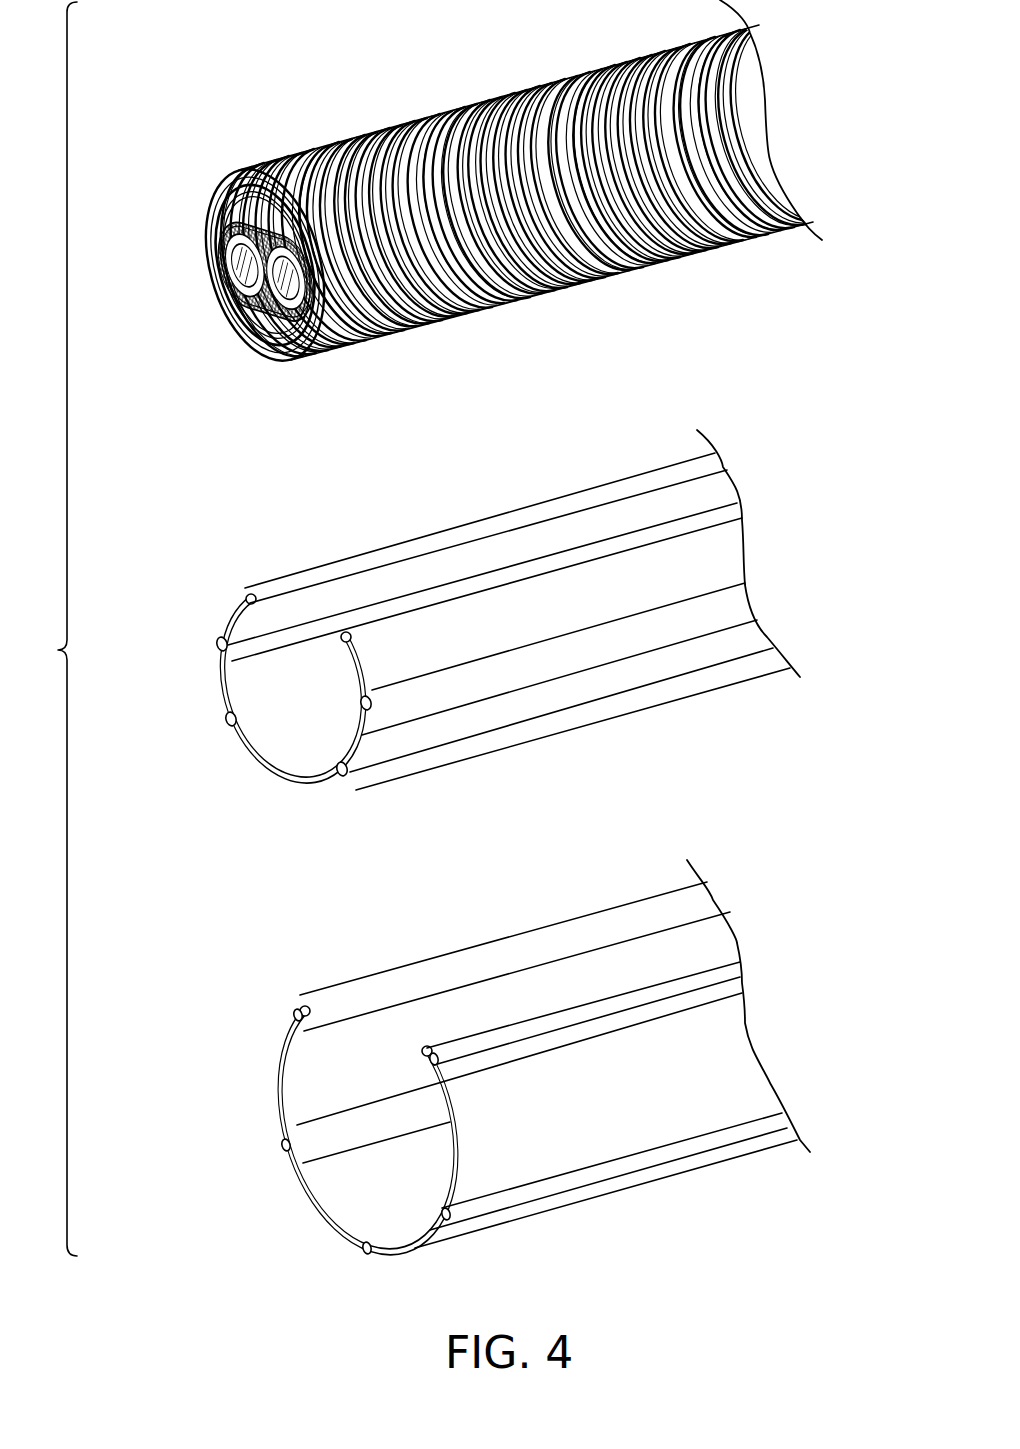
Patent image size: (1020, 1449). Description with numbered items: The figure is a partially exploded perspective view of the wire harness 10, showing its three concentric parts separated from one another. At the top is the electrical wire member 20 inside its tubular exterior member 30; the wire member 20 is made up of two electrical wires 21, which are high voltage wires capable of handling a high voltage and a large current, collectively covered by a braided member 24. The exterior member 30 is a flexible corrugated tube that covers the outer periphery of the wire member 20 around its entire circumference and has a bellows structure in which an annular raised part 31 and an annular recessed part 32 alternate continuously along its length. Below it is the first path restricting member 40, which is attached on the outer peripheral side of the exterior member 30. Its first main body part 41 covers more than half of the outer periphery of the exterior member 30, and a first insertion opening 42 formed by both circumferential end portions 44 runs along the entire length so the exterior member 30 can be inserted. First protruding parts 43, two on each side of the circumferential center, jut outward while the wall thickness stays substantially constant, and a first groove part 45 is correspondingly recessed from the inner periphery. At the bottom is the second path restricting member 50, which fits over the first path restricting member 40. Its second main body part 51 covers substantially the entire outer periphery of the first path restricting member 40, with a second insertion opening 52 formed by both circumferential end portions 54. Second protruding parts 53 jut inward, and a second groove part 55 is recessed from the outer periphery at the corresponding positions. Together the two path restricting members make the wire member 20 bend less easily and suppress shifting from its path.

The wire harness 10 is at (432, 64).
The electrical wire member 20 is at (265, 311).
The electrical wires 21 is at (262, 312).
The braided member 24 is at (262, 218).
The exterior member 30 is at (378, 137).
The annular raised part 31 is at (303, 183).
The annular recessed part 32 is at (277, 193).
The first path restricting member 40 is at (488, 516).
The first main body part 41 is at (628, 680).
The first insertion opening 42 is at (297, 582).
The first protruding part 43 is at (220, 644).
The circumferential end portions 44 is at (428, 600).
The first groove part 45 is at (256, 650).
The second path restricting member 50 is at (534, 927).
The second main body part 51 is at (665, 1130).
The second insertion opening 52 is at (376, 985).
The second protruding part 53 is at (317, 1023).
The circumferential end portions 54 is at (500, 1025).
The second groove part 55 is at (525, 1047).